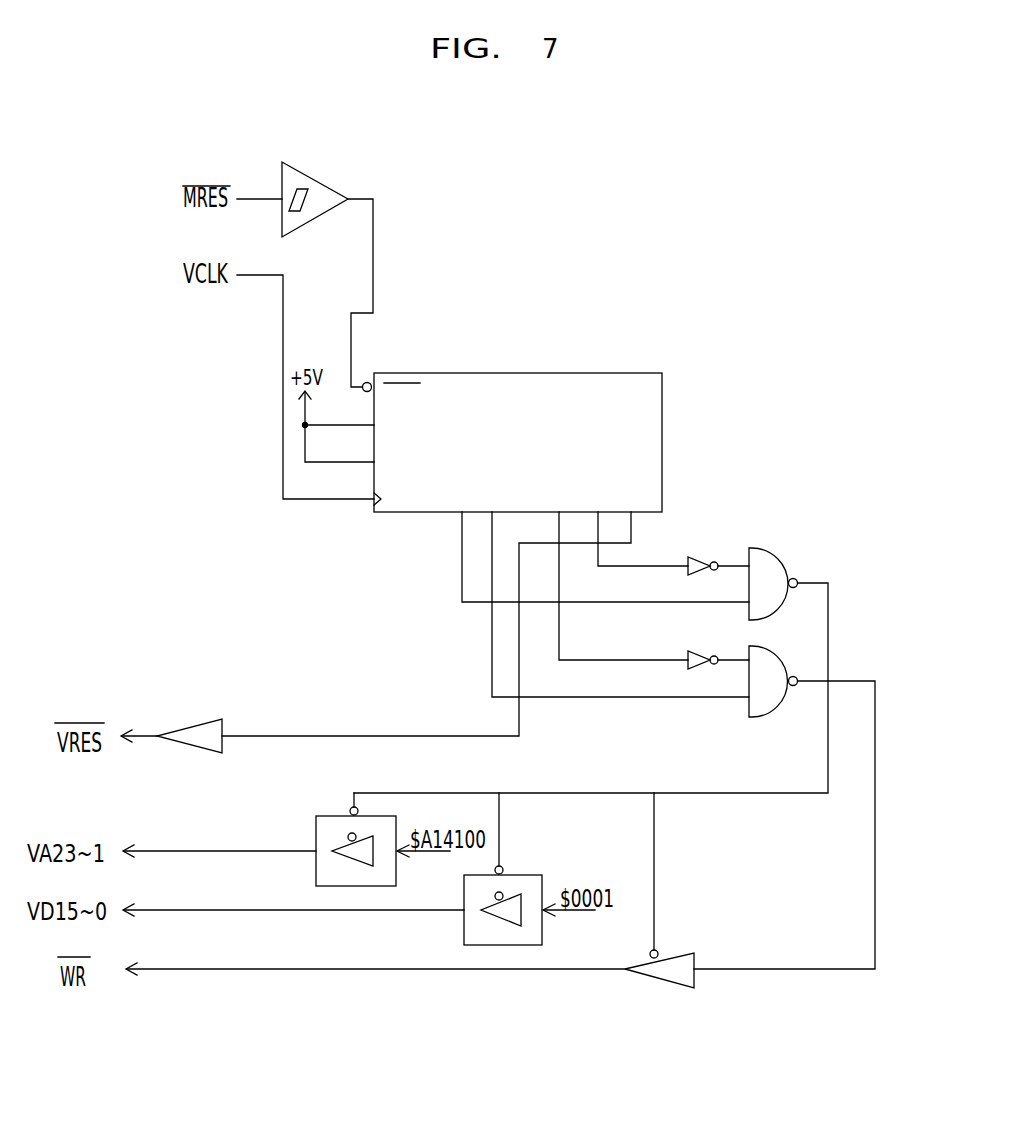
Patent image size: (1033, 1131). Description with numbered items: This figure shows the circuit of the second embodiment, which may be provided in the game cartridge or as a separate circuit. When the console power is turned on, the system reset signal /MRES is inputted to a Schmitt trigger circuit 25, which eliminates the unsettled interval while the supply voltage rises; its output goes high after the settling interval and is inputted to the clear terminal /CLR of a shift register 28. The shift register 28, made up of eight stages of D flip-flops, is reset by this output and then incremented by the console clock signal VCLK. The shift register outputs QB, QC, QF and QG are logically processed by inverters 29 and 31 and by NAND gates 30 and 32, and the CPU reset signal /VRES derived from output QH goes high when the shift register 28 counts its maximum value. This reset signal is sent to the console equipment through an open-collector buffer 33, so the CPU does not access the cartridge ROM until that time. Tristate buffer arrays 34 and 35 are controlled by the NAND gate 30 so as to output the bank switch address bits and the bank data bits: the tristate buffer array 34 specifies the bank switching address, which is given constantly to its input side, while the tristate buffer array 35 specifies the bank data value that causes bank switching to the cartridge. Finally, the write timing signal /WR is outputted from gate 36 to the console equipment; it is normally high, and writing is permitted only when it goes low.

The Schmitt trigger circuit 25 is at (338, 192).
The shift register 28 is at (645, 372).
The inverter 29 is at (698, 558).
The NAND gate 30 is at (783, 569).
The inverter 31 is at (713, 642).
The NAND gate 32 is at (775, 712).
The open-collector buffer 33 is at (180, 727).
The tristate buffer array 34 is at (313, 823).
The tristate buffer array 35 is at (462, 912).
The gate 36 is at (685, 946).